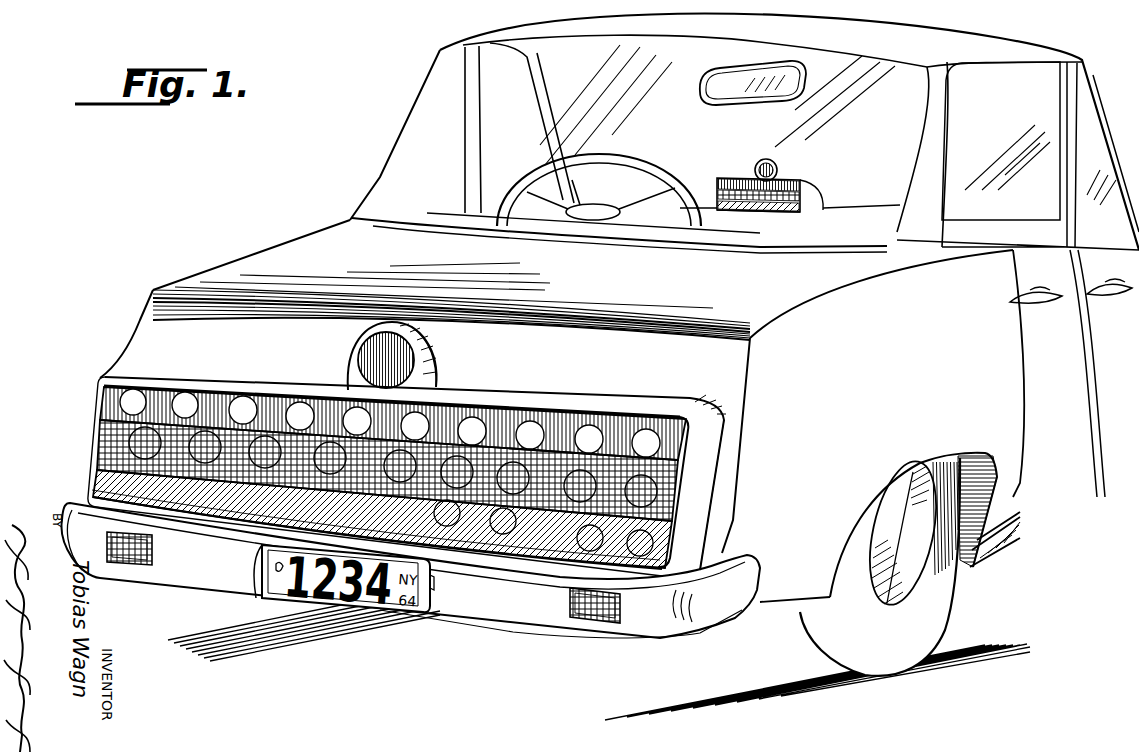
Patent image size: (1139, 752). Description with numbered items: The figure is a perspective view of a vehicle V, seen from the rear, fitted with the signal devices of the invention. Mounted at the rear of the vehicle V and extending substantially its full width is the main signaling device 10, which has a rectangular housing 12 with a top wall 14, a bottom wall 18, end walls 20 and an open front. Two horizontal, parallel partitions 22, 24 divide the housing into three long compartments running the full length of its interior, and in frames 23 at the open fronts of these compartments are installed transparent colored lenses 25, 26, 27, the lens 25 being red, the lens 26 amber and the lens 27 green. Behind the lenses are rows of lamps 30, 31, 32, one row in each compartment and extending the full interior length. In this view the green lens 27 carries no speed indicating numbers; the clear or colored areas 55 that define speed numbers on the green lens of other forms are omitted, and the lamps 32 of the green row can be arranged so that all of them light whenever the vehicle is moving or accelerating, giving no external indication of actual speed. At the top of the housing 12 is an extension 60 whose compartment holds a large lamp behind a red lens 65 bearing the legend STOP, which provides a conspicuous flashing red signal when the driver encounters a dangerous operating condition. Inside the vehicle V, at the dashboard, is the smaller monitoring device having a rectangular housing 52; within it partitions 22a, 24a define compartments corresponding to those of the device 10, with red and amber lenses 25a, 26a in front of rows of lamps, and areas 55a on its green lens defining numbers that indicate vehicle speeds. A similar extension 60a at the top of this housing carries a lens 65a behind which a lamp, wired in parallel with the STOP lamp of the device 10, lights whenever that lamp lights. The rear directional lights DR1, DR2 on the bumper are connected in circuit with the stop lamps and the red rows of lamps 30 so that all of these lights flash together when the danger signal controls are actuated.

The vehicle V is at (287, 262).
The main signaling device 10 is at (537, 366).
The housing 12 is at (690, 399).
The top wall 14 is at (633, 407).
The bottom wall 18 is at (253, 527).
The end walls 20 is at (690, 522).
The partition 22 is at (496, 455).
The frames 23 is at (693, 477).
The partition 24 is at (537, 522).
The red lens 25 is at (168, 391).
The amber lens 26 is at (100, 448).
The green lens 27 is at (140, 502).
The red row of lamps 30 is at (125, 392).
The row of lamps 31 is at (190, 443).
The green row of lamps 32 is at (110, 485).
The speed-indicating areas 55 is at (171, 503).
The extension 60 is at (430, 368).
The STOP lens 65 is at (357, 340).
The housing 52 is at (813, 207).
The partition 22a is at (803, 184).
The partition 24a is at (800, 203).
The red lens 25a is at (737, 180).
The amber lens 26a is at (720, 189).
The speed-indicating areas 55a is at (733, 210).
The extension 60a is at (777, 163).
The lens 65a is at (780, 170).
The rear directional light DR1 is at (133, 563).
The rear directional light DR2 is at (597, 617).